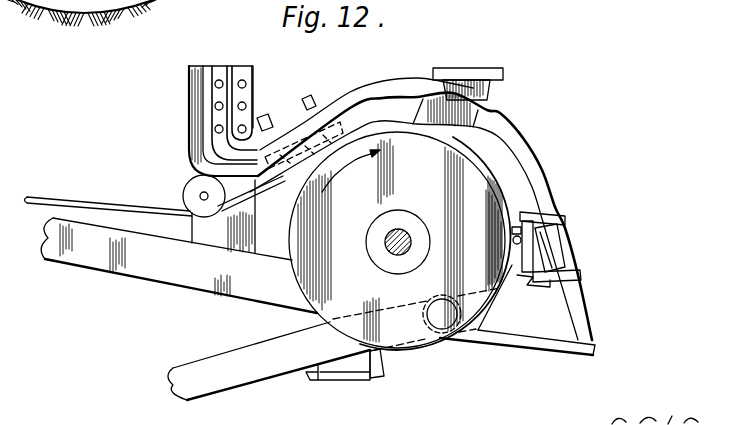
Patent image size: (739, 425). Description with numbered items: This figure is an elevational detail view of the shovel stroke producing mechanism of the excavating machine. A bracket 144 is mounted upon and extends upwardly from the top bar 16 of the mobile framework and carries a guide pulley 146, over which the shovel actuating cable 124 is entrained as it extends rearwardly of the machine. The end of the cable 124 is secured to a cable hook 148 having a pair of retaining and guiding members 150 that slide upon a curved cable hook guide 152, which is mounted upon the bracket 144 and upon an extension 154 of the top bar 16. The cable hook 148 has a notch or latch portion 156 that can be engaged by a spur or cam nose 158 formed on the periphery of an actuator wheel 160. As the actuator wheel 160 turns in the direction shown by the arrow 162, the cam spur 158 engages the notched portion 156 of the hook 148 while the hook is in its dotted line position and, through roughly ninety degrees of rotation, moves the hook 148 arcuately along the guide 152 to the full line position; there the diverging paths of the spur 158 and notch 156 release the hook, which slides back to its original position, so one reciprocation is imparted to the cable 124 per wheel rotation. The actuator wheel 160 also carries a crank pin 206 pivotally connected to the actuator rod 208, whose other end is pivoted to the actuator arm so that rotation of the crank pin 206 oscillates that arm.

The top bar 16 is at (92, 262).
The shovel actuating cable 124 is at (64, 195).
The bracket 144 is at (196, 116).
The guide pulley 146 is at (193, 190).
The cable hook 148 is at (302, 98).
The retaining and guiding members 150 is at (560, 214).
The curved cable hook guide 152 is at (527, 152).
The extension of the top bar 154 is at (539, 343).
The notch or latch portion 156 is at (338, 140).
The spur or cam nose 158 is at (493, 320).
The actuator wheel 160 is at (317, 300).
The arrow 162 is at (351, 187).
The crank pin 206 is at (440, 320).
The actuator rod 208 is at (252, 367).